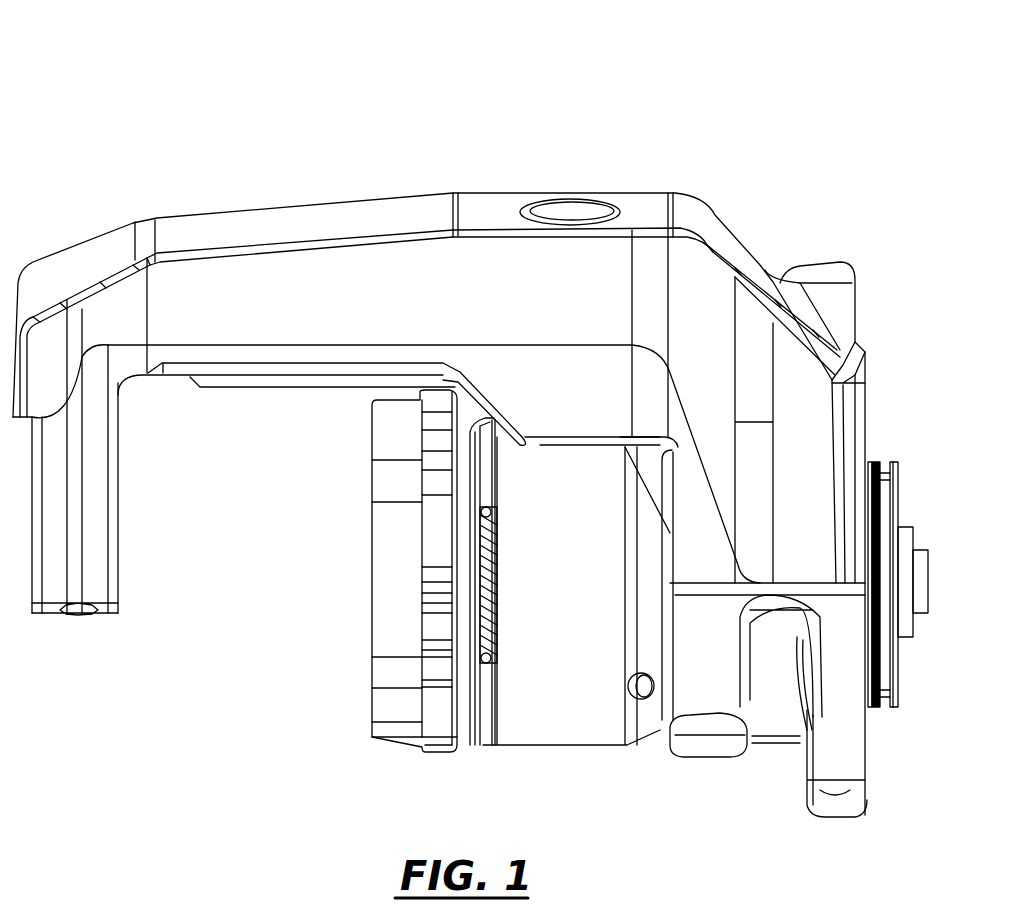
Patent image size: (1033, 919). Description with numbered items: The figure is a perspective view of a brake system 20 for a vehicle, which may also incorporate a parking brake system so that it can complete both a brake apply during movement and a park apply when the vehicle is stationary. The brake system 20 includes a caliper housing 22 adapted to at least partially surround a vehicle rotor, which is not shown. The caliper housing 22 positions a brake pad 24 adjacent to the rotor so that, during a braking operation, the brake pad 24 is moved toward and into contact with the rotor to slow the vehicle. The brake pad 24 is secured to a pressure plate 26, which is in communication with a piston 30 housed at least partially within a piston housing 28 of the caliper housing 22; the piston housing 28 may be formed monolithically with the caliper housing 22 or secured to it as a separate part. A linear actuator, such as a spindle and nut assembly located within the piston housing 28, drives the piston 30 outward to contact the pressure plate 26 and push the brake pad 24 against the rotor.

The brake system 20 is at (190, 90).
The caliper housing 22 is at (345, 225).
The brake pad 24 is at (390, 569).
The pressure plate 26 is at (438, 735).
The piston housing 28 is at (602, 717).
The piston 30 is at (508, 677).